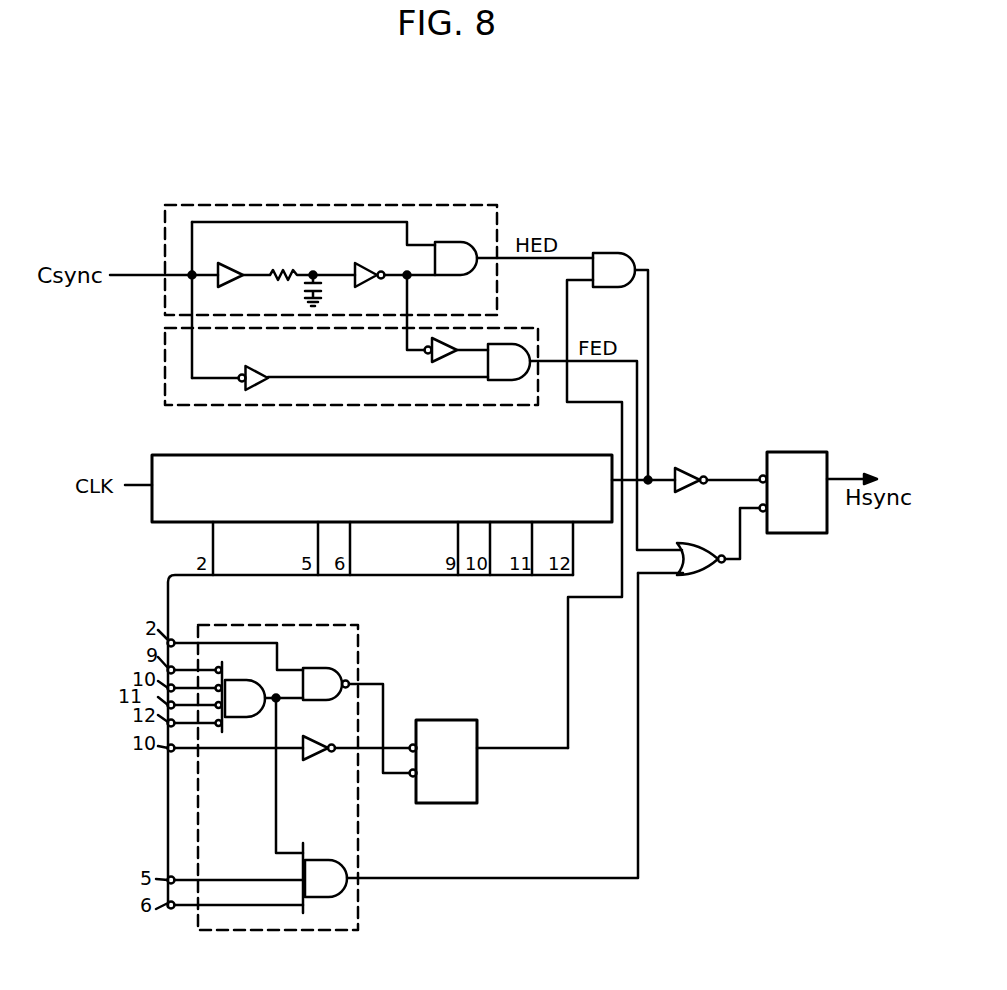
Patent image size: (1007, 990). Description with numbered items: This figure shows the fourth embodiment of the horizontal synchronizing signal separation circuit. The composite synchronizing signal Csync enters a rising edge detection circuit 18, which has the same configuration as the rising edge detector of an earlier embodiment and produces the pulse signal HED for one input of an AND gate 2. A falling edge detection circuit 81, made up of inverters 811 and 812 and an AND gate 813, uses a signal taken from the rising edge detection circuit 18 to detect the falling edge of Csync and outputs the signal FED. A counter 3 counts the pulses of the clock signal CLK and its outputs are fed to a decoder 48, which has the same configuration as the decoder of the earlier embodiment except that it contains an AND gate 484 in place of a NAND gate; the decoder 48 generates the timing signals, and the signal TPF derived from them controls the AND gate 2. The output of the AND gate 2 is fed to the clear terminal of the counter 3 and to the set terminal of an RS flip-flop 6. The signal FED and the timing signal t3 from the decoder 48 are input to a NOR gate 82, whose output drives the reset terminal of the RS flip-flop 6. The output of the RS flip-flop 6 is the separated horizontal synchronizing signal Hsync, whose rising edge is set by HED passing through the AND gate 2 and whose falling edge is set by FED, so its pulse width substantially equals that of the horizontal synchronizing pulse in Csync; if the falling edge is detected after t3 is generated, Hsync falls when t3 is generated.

The rising edge detection circuit 18 is at (468, 195).
The falling edge detection circuit 81 is at (309, 364).
The inverter 811 is at (258, 390).
The inverter 812 is at (426, 352).
The AND gate 813 is at (500, 380).
The AND gate 2 is at (620, 262).
The counter 3 is at (342, 455).
The decoder 48 is at (407, 751).
The AND gate 484 is at (335, 897).
The NOR gate 82 is at (677, 577).
The RS flip-flop 6 is at (783, 452).